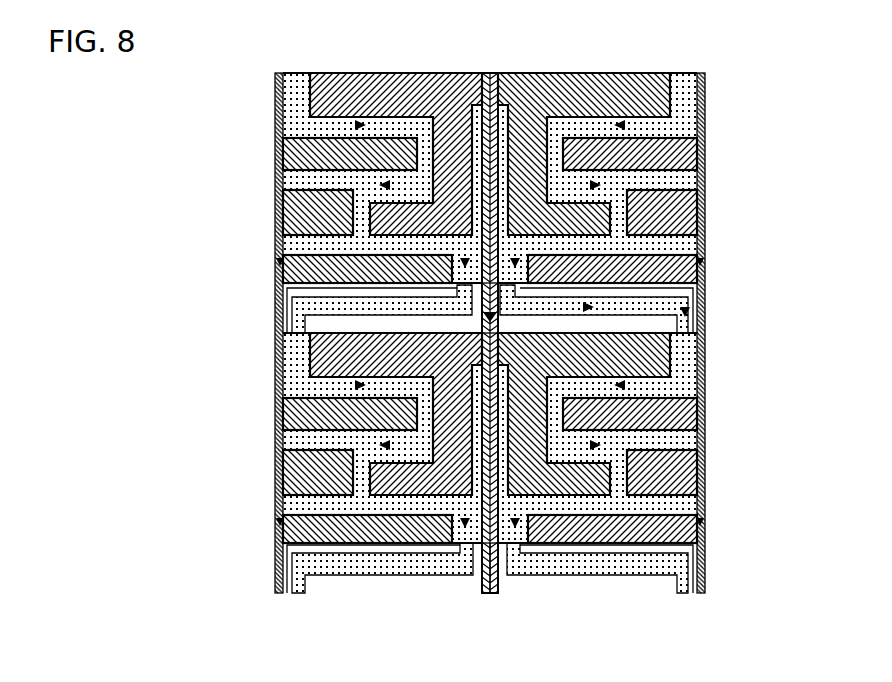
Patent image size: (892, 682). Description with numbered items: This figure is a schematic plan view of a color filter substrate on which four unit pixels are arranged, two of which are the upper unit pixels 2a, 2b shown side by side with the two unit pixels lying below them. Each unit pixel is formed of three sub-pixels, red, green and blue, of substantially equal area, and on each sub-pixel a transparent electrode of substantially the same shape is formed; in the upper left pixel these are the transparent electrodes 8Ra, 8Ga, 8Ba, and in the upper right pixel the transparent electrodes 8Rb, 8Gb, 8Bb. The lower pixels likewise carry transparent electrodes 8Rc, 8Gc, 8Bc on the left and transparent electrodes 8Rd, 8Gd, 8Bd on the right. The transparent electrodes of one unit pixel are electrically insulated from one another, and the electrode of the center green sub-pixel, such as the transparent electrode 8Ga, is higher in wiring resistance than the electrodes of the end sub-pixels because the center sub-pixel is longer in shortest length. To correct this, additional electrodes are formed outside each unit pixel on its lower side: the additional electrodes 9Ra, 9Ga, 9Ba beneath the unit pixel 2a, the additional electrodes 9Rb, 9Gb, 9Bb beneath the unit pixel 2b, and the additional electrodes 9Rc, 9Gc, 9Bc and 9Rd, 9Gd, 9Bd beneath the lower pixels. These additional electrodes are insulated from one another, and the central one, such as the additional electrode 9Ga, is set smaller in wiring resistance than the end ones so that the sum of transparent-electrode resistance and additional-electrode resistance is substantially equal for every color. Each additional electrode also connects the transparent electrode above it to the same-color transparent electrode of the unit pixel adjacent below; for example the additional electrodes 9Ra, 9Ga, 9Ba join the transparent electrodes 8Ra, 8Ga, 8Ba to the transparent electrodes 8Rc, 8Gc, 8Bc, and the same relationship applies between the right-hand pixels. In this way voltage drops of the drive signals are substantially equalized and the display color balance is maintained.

The unit pixel 2a is at (337, 326).
The unit pixel 2b is at (646, 331).
The transparent electrode 8Ra is at (310, 145).
The transparent electrode 8Ga is at (298, 73).
The transparent electrode 8Ba is at (344, 80).
The transparent electrode 8Rb is at (628, 85).
The transparent electrode 8Gb is at (682, 87).
The transparent electrode 8Bb is at (672, 140).
The transparent electrode 8Rc is at (290, 408).
The transparent electrode 8Gc is at (293, 439).
The transparent electrode 8Bc is at (378, 487).
The transparent electrode 8Rd is at (605, 480).
The transparent electrode 8Gd is at (687, 442).
The transparent electrode 8Bd is at (693, 414).
The additional electrode 9Ra is at (283, 297).
The additional electrode 9Ga is at (305, 310).
The additional electrode 9Ba is at (488, 313).
The additional electrode 9Rb is at (500, 313).
The additional electrode 9Gb is at (657, 312).
The additional electrode 9Bb is at (700, 295).
The additional electrode 9Rc is at (283, 572).
The additional electrode 9Gc is at (350, 572).
The additional electrode 9Bc is at (487, 580).
The additional electrode 9Rd is at (485, 580).
The additional electrode 9Gd is at (625, 567).
The additional electrode 9Bd is at (705, 567).